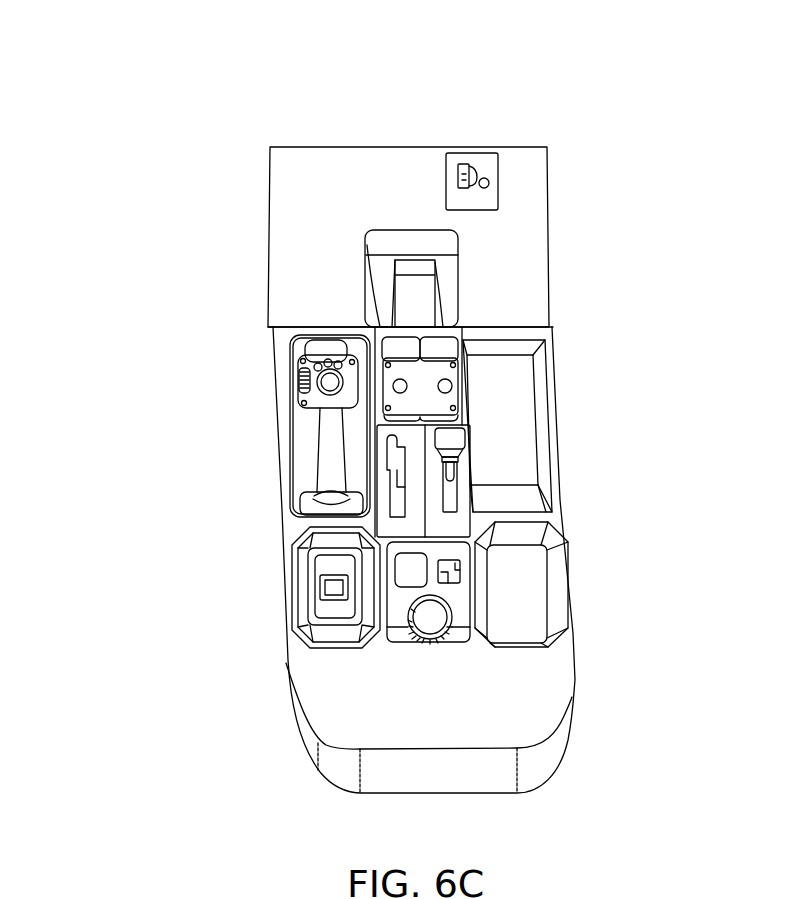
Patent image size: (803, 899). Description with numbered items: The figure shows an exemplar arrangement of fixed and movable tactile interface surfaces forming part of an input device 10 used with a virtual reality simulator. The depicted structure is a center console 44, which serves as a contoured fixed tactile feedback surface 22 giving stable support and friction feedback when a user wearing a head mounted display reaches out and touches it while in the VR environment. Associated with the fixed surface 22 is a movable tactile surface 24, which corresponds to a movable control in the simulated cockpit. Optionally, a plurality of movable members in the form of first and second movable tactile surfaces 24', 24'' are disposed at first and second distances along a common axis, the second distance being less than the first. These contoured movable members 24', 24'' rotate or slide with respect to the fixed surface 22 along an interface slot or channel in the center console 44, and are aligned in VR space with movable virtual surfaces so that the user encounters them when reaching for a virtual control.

The input device 10 is at (158, 46).
The center console 44 is at (322, 221).
The fixed tactile feedback surface 22 is at (375, 466).
The movable tactile surface 24 is at (496, 481).
The first movable tactile surface 24' is at (539, 474).
The second movable tactile surface 24'' is at (513, 425).